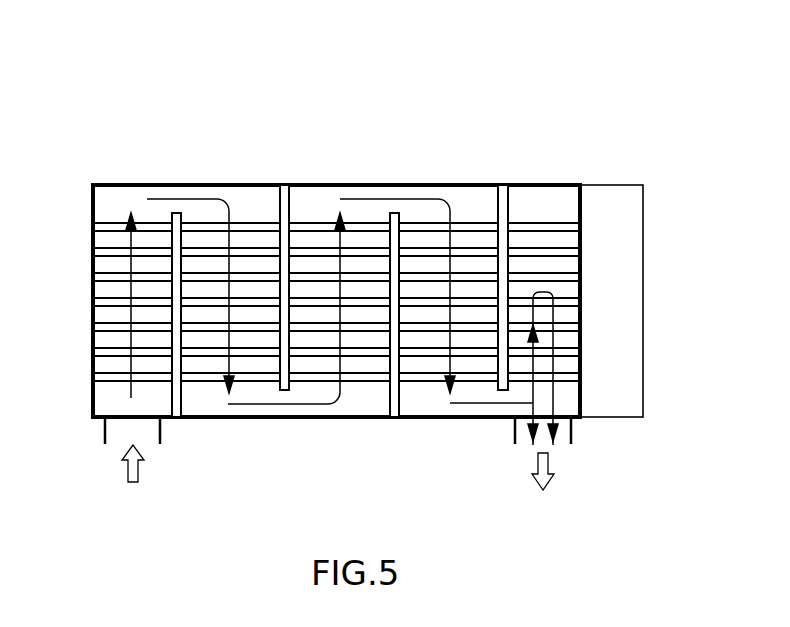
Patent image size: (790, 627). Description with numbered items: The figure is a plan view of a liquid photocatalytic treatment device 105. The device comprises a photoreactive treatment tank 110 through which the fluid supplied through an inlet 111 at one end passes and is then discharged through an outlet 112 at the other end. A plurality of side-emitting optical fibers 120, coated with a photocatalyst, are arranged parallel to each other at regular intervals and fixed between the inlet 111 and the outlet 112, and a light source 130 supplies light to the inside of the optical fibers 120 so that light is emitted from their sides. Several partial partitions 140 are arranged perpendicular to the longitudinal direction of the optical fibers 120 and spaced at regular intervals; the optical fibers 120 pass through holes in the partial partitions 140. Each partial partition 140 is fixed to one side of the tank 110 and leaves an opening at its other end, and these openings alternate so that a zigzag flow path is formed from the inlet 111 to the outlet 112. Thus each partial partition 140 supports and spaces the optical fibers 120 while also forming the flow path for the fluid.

The liquid photocatalytic treatment device 105 is at (430, 171).
The photoreactive treatment tank 110 is at (176, 184).
The inlet 111 is at (102, 435).
The outlet 112 is at (575, 435).
The side-emitting optical fiber 120 is at (436, 349).
The light source 130 is at (620, 313).
The partial partition 140 is at (173, 393).